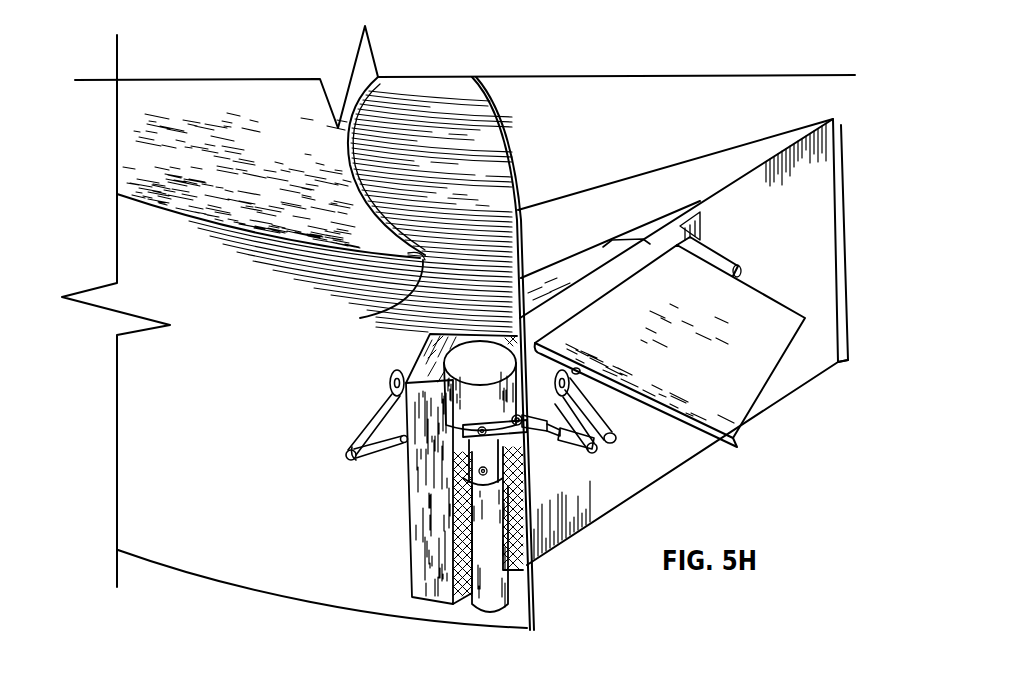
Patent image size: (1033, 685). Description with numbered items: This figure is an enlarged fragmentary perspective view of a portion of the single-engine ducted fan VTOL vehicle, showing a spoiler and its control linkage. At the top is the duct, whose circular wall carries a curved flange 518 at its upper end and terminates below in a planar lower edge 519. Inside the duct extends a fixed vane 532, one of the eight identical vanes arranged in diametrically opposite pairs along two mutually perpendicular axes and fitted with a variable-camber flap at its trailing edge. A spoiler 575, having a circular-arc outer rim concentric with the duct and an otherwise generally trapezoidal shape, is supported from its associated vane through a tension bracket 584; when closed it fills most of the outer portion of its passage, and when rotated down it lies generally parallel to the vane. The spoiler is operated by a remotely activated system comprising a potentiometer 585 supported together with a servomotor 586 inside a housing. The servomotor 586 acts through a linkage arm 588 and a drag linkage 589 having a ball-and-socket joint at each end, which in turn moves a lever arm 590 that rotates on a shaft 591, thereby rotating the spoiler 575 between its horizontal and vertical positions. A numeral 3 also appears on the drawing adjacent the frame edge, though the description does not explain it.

The curved flange 518 is at (350, 133).
The planar lower edge 519 is at (362, 318).
The fixed vane 532 is at (696, 201).
The spoiler 575 is at (528, 270).
The tension bracket 584 is at (633, 205).
The potentiometer 585 is at (536, 343).
The servomotor 586 is at (490, 580).
The linkage arm 588 is at (477, 452).
The drag linkage 589 is at (560, 436).
The lever arm 590 is at (610, 422).
The shaft 591 is at (578, 382).
The frame edge 3 is at (834, 366).